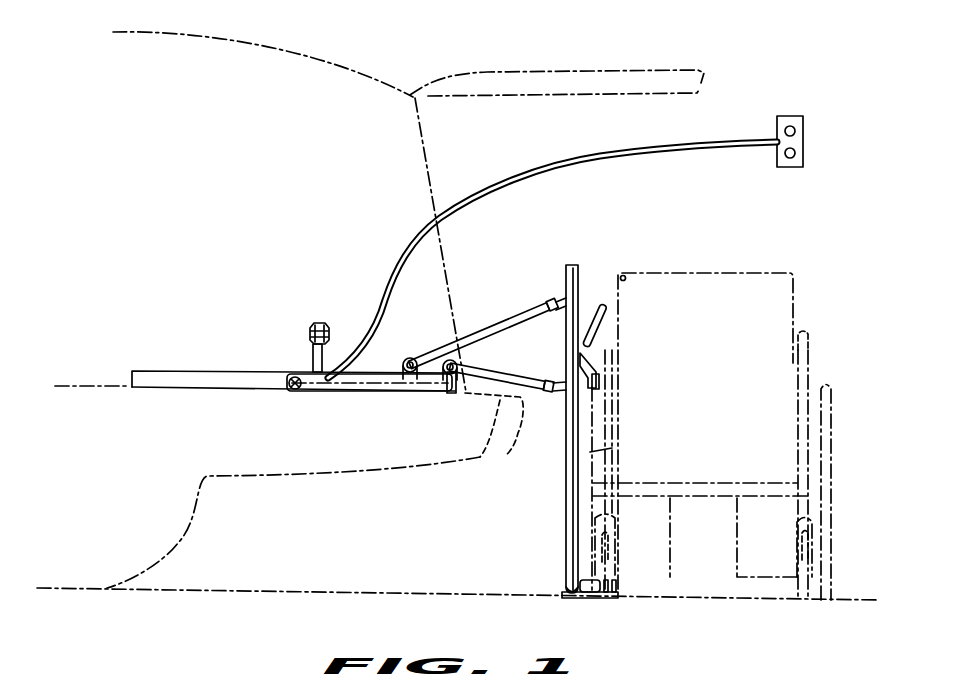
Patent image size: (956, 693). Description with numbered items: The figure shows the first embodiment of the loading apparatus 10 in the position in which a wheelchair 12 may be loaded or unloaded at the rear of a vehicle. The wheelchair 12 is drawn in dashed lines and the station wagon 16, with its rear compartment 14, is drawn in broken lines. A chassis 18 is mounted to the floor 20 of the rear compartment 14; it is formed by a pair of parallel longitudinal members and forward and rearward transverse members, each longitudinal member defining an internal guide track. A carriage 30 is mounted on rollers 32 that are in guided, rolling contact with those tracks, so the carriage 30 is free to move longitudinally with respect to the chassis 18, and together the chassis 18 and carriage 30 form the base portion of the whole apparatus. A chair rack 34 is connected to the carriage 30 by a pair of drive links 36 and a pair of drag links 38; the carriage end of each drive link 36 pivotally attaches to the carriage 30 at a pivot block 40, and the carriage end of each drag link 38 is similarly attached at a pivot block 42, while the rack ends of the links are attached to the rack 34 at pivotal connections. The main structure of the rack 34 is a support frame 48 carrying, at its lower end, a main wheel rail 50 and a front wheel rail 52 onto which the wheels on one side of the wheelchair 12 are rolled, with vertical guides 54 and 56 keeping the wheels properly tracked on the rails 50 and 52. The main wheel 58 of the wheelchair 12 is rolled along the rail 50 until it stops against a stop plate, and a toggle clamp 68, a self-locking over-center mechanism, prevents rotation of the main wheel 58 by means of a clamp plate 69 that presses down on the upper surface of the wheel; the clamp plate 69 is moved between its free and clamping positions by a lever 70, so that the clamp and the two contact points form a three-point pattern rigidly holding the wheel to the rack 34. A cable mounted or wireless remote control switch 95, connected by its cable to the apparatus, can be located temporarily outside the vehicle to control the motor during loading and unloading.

The loading apparatus 10 is at (345, 302).
The wheelchair 12 is at (712, 266).
The rear compartment 14 is at (234, 173).
The station wagon 16 is at (352, 60).
The chassis 18 is at (182, 377).
The floor 20 is at (92, 385).
The carriage 30 is at (333, 390).
The rollers 32 is at (275, 391).
The chair rack 34 is at (572, 264).
The drive links 36 is at (499, 325).
The drag links 38 is at (538, 394).
The pivot block 40 is at (403, 368).
The pivot block 42 is at (441, 368).
The support frame 48 is at (575, 274).
The main wheel rail 50 is at (588, 598).
The front wheel rail 52 is at (608, 596).
The vertical guide 54 is at (580, 585).
The vertical guide 56 is at (602, 579).
The main wheel 58 is at (592, 450).
The toggle clamp 68 is at (594, 364).
The clamp plate 69 is at (599, 383).
The lever 70 is at (606, 314).
The remote control switch 95 is at (804, 141).